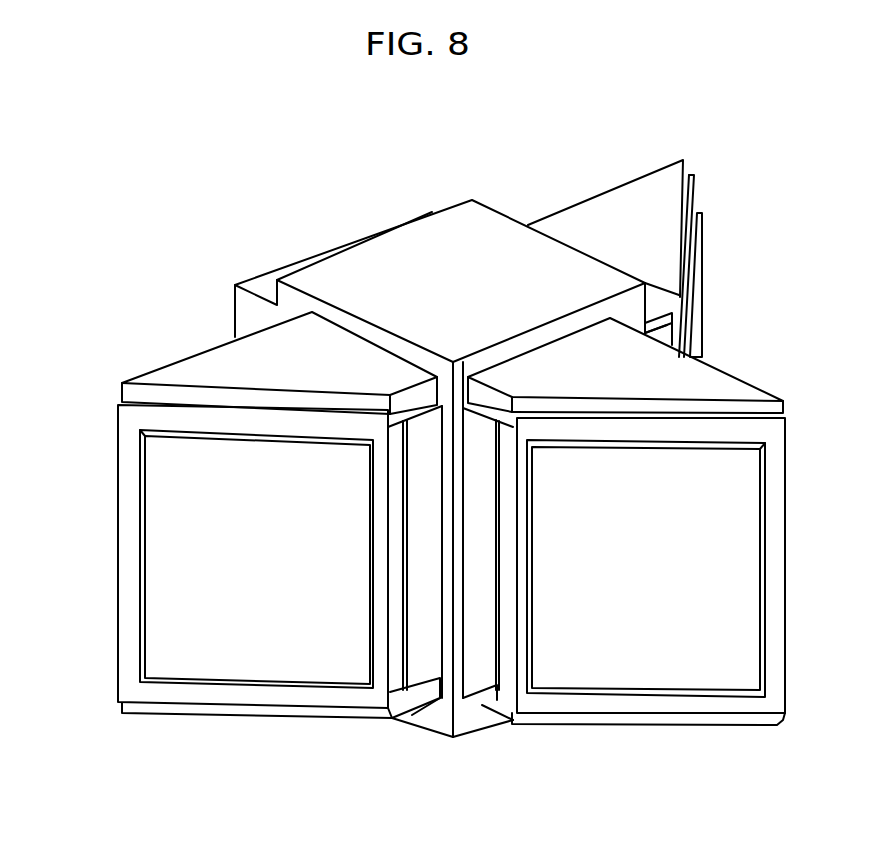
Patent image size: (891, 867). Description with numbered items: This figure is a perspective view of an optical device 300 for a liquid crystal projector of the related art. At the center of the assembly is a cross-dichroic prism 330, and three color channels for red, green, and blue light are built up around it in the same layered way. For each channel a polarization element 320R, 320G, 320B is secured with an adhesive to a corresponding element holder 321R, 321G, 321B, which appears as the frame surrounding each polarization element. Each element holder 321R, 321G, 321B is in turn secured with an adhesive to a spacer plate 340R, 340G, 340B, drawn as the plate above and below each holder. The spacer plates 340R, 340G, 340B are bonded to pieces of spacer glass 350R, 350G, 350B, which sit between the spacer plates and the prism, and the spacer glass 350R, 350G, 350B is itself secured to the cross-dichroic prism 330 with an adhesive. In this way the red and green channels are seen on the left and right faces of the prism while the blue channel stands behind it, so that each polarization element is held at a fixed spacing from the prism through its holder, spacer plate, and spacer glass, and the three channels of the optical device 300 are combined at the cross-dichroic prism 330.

The optical device 300 is at (219, 202).
The cross-dichroic prism 330 is at (371, 268).
The spacer plate 340R is at (196, 373).
The spacer plate 340G is at (702, 377).
The spacer plate 340B is at (583, 218).
The polarization element 320R is at (160, 515).
The polarization element 320G is at (743, 515).
The polarization element 320B is at (700, 259).
The element holder 321R is at (132, 565).
The element holder 321G is at (775, 568).
The element holder 321B is at (697, 186).
The spacer glass 350R is at (427, 667).
The spacer glass 350G is at (480, 668).
The spacer glass 350B is at (660, 332).